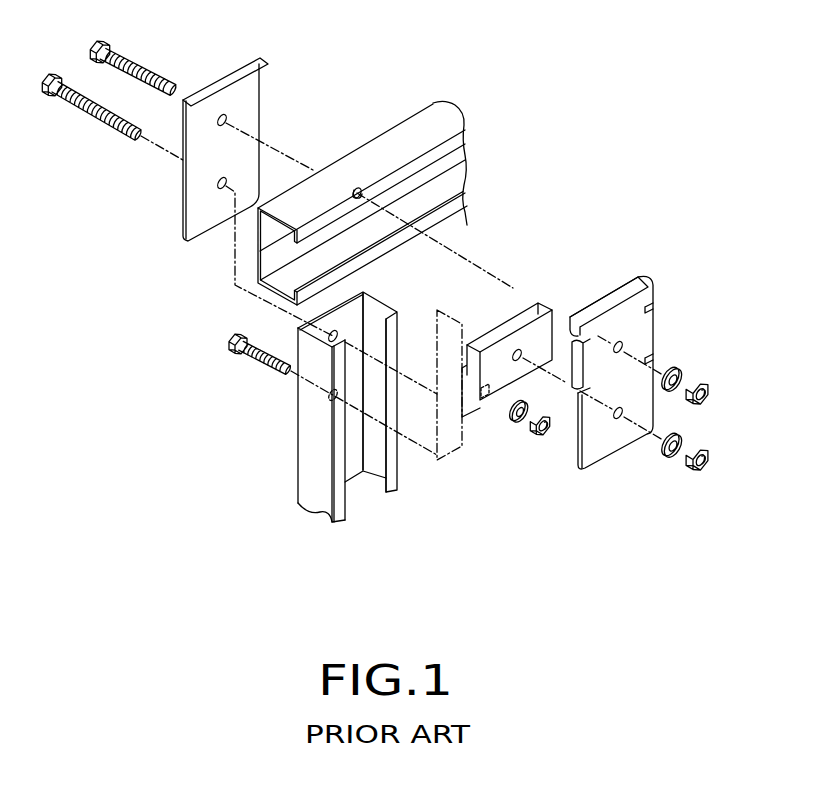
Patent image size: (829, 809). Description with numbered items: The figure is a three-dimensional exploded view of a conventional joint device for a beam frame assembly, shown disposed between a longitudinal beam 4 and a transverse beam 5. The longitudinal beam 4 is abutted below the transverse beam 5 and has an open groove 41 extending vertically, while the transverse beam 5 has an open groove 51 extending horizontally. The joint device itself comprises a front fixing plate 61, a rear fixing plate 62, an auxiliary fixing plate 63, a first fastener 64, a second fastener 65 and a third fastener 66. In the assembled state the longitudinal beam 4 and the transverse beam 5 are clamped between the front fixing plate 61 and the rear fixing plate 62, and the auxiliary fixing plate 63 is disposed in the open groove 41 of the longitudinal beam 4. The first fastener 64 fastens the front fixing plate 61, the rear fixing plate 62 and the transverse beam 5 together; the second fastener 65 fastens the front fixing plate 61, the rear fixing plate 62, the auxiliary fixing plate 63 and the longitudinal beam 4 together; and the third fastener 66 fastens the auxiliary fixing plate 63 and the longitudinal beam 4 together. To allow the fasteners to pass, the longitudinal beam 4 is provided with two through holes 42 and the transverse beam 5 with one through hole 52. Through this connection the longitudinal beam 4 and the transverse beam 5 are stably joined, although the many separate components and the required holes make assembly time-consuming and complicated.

The longitudinal beam 4 is at (341, 398).
The open groove 41 is at (357, 485).
The through holes 42 is at (337, 393).
The transverse beam 5 is at (386, 199).
The open groove 51 is at (452, 183).
The through hole 52 is at (355, 190).
The front fixing plate 61 is at (640, 333).
The rear fixing plate 62 is at (218, 88).
The auxiliary fixing plate 63 is at (475, 407).
The first fastener 64 is at (93, 47).
The second fastener 65 is at (43, 91).
The third fastener 66 is at (231, 345).